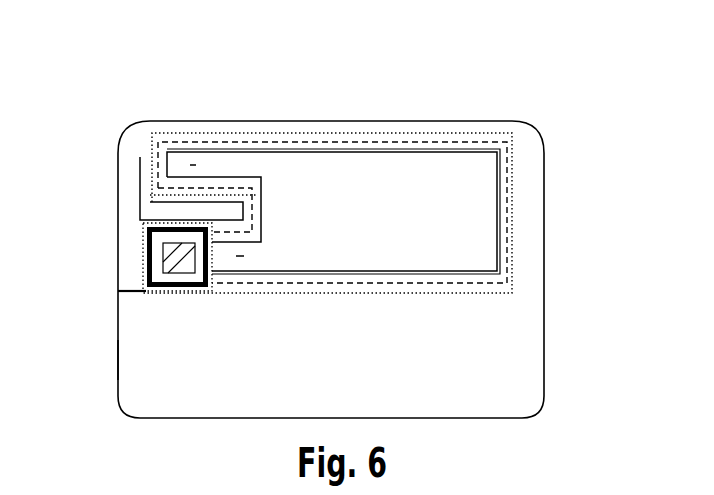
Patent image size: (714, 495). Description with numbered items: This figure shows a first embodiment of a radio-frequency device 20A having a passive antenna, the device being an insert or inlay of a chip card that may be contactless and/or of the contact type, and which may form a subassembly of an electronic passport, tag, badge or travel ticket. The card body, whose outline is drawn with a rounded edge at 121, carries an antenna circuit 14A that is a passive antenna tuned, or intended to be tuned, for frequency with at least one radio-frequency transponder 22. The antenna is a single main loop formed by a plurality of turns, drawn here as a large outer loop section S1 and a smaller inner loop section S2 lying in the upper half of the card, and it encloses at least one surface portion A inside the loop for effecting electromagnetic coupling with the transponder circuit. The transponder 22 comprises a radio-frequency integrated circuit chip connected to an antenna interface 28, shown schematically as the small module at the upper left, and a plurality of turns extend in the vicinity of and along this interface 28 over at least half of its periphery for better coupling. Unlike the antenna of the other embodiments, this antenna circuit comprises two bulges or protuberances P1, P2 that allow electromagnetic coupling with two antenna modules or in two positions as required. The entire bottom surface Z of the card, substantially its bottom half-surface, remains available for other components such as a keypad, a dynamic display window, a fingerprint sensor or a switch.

The device 20A is at (570, 283).
The card edge 121 is at (118, 356).
The antenna 14A is at (518, 224).
The first antenna loop section S1 is at (352, 132).
The second antenna loop section S2 is at (142, 193).
The surface portion A is at (492, 177).
The antenna interface 28 is at (141, 265).
The radio-frequency transponder 22 is at (118, 293).
The bulge P1 is at (189, 167).
The bulge P2 is at (240, 256).
The bottom surface Z is at (492, 346).